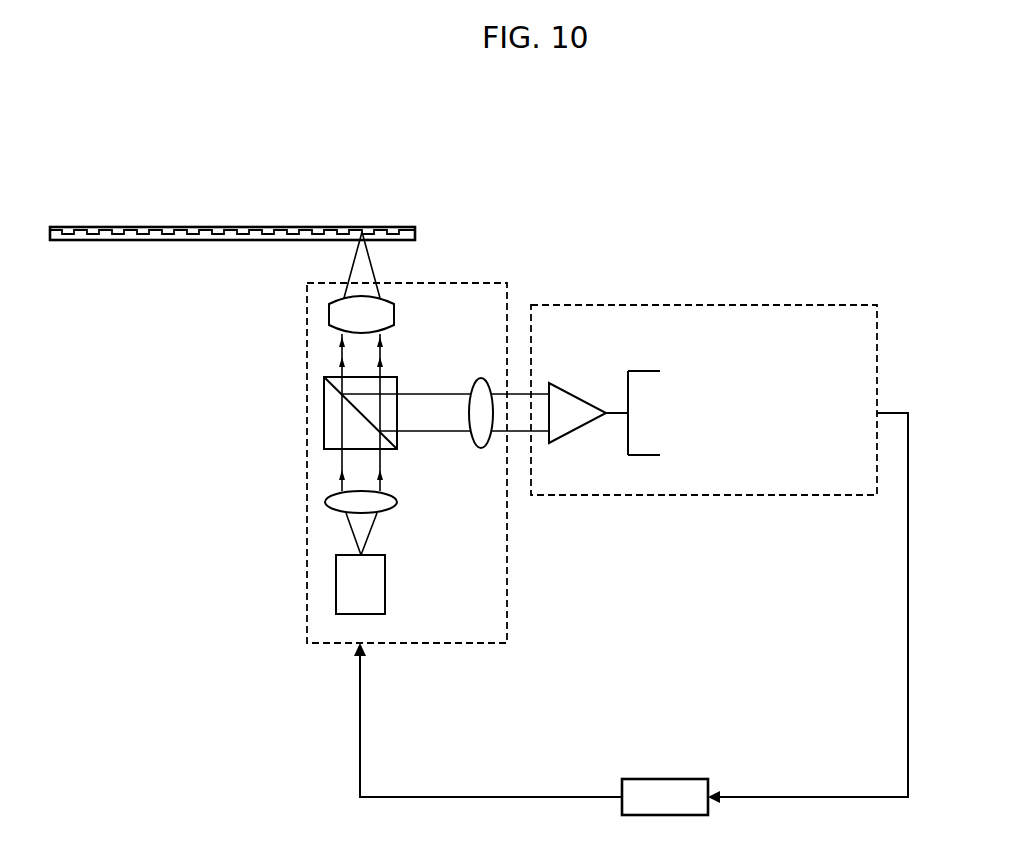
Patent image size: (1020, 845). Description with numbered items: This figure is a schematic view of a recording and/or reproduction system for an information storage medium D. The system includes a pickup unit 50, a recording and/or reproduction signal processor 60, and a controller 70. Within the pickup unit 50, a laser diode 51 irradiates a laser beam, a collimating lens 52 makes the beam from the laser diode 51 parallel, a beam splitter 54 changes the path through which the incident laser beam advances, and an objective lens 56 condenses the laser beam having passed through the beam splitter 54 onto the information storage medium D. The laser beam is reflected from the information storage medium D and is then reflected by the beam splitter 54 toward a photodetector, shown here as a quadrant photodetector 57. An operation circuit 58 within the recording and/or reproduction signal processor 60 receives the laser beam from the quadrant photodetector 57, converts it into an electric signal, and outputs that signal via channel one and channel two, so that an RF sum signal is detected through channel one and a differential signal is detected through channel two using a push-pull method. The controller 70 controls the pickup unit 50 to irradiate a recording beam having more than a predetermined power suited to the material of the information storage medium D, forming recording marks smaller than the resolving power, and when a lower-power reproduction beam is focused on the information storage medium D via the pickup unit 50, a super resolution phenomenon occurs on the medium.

The information storage medium D is at (222, 221).
The pickup unit 50 is at (296, 627).
The laser diode 51 is at (336, 580).
The collimating lens 52 is at (325, 502).
The beam splitter 54 is at (324, 407).
The objective lens 56 is at (329, 314).
The quadrant photodetector 57 is at (481, 378).
The operation circuit 58 is at (575, 390).
The recording and/or reproduction signal processor 60 is at (658, 292).
The controller 70 is at (683, 779).